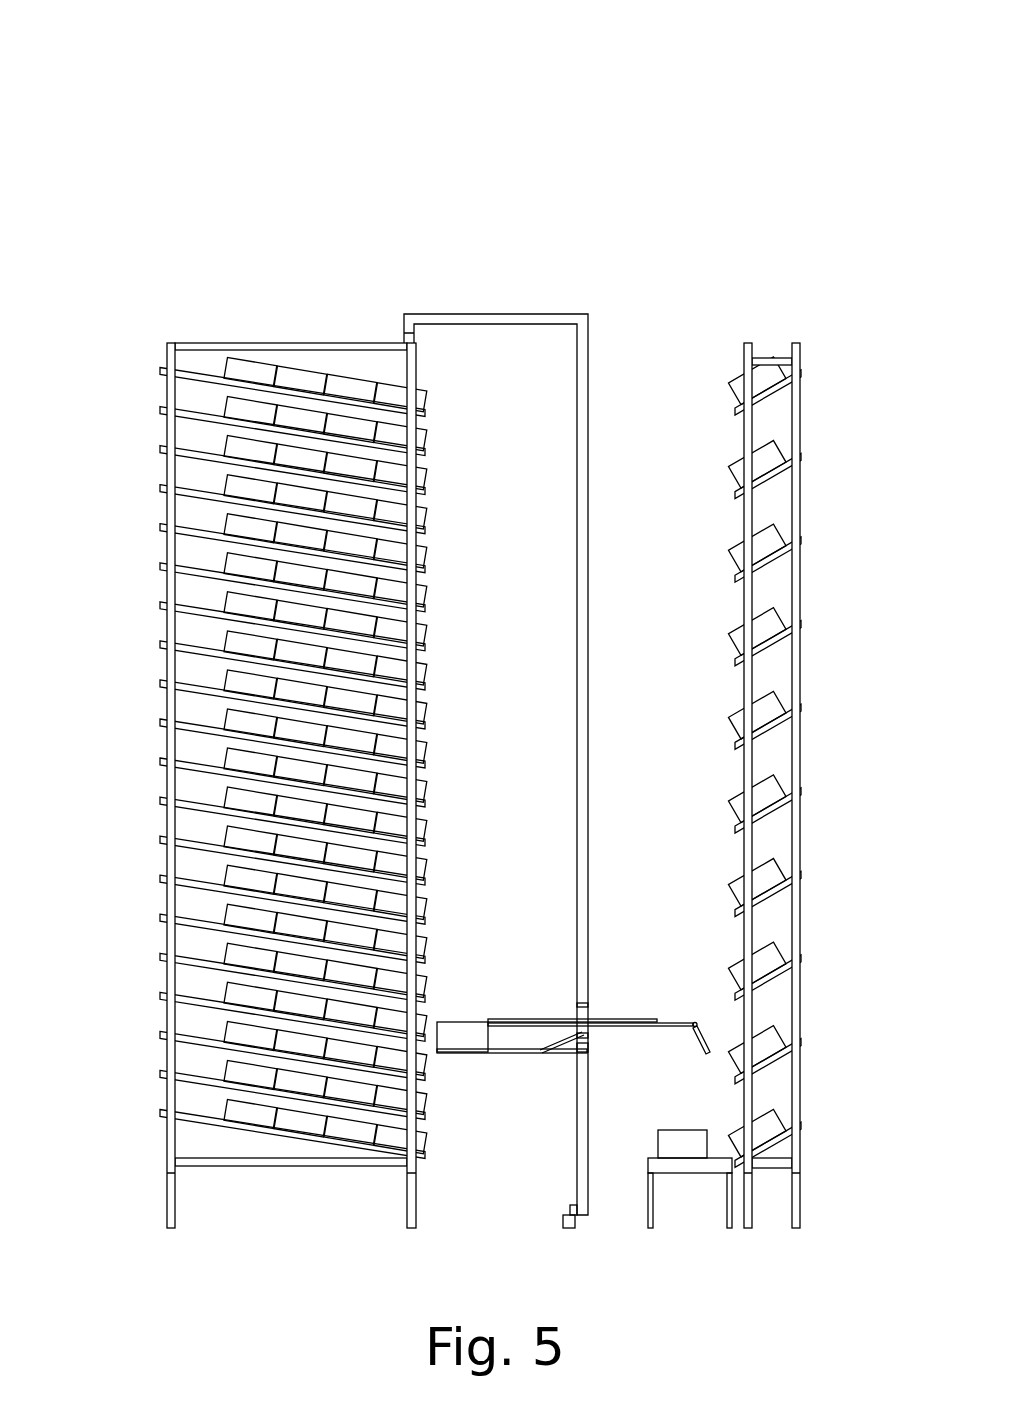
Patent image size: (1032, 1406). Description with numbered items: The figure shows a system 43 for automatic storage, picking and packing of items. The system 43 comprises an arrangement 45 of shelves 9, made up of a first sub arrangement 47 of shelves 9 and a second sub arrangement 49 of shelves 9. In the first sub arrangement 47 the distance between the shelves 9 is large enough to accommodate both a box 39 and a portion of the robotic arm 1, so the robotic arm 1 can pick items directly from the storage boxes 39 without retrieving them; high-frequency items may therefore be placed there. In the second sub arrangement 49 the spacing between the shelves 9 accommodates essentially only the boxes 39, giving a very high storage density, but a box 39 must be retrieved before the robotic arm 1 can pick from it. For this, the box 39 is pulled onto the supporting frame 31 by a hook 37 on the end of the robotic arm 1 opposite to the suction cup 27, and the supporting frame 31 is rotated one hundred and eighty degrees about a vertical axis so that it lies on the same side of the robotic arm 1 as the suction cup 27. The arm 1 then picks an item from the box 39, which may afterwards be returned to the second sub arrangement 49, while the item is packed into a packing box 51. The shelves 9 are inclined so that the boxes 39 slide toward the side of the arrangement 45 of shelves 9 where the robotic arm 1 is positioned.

The robotic arm 1 is at (637, 955).
The shelves 9 is at (185, 453).
The suction cup 27 is at (708, 1052).
The supporting frame 31 is at (500, 1082).
The hook 37 is at (488, 1023).
The box 39 is at (740, 407).
The system 43 is at (313, 133).
The arrangement of shelves 45 is at (667, 132).
The first sub arrangement 47 is at (795, 297).
The second sub arrangement 49 is at (268, 267).
The packing box 51 is at (655, 1155).